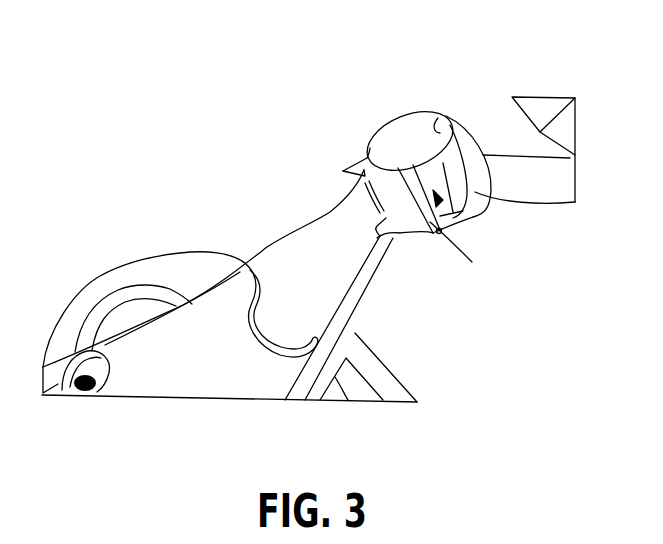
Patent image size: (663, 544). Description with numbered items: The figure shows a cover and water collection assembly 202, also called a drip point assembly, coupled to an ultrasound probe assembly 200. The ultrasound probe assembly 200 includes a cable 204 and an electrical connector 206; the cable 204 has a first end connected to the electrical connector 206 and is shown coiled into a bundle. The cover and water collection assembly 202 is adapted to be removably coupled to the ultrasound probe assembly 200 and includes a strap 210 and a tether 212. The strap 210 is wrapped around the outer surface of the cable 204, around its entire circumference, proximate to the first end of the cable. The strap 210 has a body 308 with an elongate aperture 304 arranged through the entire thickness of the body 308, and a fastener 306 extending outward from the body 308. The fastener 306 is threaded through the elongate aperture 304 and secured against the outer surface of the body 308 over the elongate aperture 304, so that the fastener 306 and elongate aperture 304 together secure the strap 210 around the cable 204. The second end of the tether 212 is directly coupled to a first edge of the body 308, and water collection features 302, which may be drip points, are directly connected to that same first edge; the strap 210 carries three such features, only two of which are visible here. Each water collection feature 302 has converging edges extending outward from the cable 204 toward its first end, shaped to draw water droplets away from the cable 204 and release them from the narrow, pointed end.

The ultrasound probe assembly 200 is at (63, 237).
The cover and water collection assembly 202 is at (540, 318).
The cable 204 is at (323, 228).
The electrical connector 206 is at (135, 367).
The strap 210 is at (467, 152).
The tether 212 is at (363, 293).
The water collection features 302 is at (350, 168).
The elongate aperture 304 is at (441, 234).
The fastener 306 is at (400, 135).
The body 308 is at (475, 192).